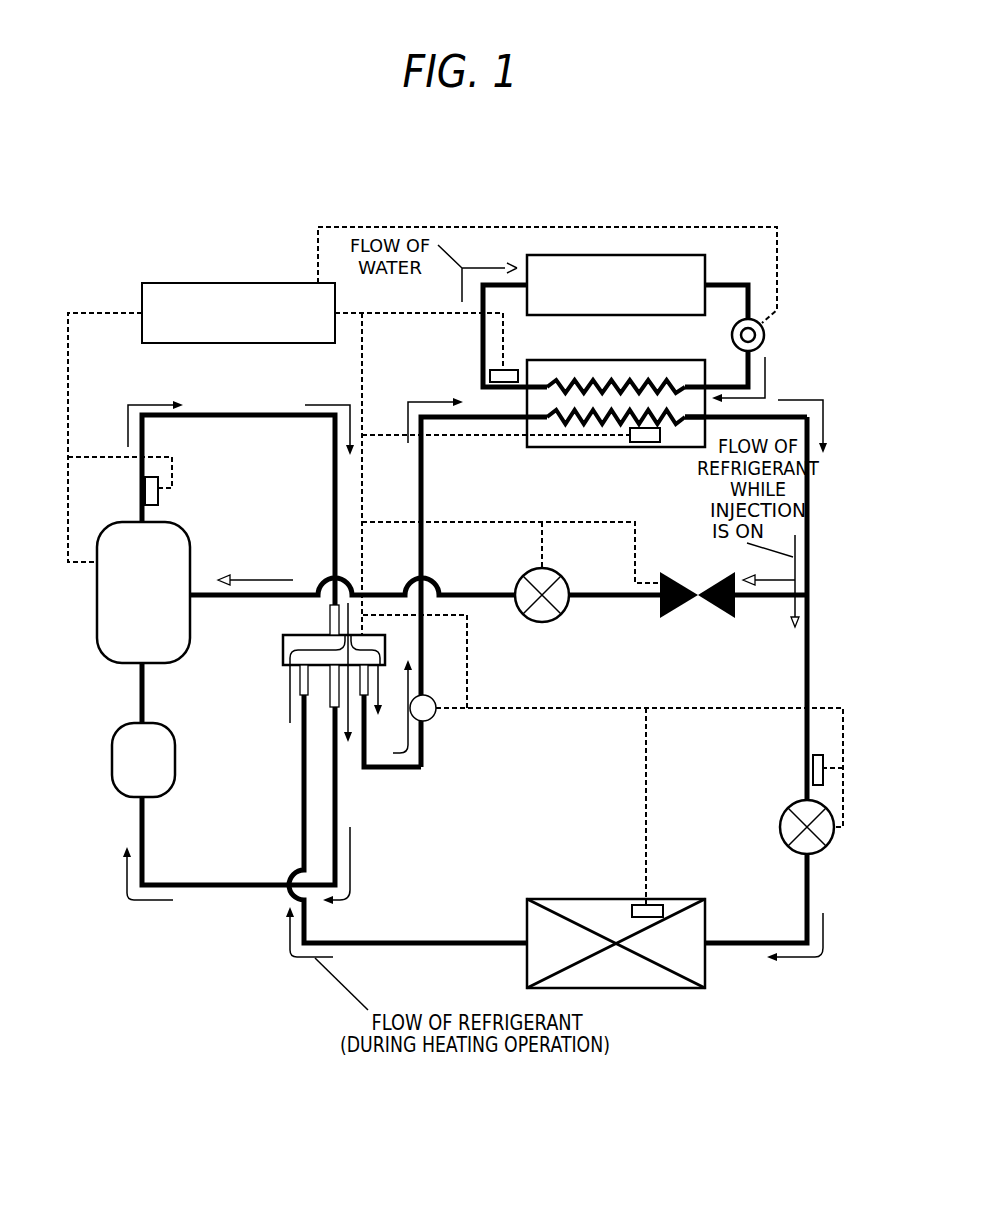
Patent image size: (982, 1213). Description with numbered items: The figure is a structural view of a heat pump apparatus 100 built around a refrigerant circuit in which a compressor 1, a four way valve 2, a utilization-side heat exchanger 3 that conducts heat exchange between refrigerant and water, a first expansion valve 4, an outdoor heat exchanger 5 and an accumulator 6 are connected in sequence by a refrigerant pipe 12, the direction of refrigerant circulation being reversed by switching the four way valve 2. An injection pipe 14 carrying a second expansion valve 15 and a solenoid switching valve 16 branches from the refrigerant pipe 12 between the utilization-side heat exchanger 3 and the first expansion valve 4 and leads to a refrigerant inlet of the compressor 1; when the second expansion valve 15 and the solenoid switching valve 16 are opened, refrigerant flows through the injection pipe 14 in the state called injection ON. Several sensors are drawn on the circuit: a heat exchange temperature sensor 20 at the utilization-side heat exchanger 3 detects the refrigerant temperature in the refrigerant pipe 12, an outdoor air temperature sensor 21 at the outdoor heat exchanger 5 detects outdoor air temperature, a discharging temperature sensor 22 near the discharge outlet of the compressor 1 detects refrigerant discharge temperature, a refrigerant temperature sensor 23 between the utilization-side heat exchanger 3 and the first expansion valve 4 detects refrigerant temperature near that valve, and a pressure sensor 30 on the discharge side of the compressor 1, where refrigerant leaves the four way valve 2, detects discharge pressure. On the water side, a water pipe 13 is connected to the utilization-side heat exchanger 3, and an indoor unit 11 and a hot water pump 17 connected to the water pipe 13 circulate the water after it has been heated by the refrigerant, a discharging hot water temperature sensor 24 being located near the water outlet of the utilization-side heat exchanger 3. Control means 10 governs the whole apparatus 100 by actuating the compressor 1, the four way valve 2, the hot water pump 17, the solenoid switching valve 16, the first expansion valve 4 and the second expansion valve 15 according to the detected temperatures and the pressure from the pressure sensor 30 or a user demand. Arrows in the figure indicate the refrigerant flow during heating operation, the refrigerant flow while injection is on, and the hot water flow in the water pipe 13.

The heat pump apparatus 100 is at (183, 229).
The control means 10 is at (267, 283).
The indoor unit 11 is at (618, 265).
The water pipe 13 is at (750, 297).
The hot water pump 17 is at (765, 333).
The discharging hot water temperature sensor 24 is at (497, 373).
The discharging temperature sensor 22 is at (152, 493).
The compressor 1 is at (160, 585).
The four way valve 2 is at (283, 642).
The accumulator 6 is at (155, 752).
The utilization-side heat exchanger 3 is at (588, 448).
The heat exchange temperature sensor 20 is at (647, 437).
The second expansion valve 15 is at (542, 613).
The injection pipe 14 is at (615, 597).
The solenoid switching valve 16 is at (677, 608).
The refrigerant pipe 12 is at (810, 580).
The pressure sensor 30 is at (425, 712).
The refrigerant temperature sensor 23 is at (818, 770).
The first expansion valve 4 is at (793, 820).
The outdoor heat exchanger 5 is at (603, 899).
The outdoor air temperature sensor 21 is at (653, 910).